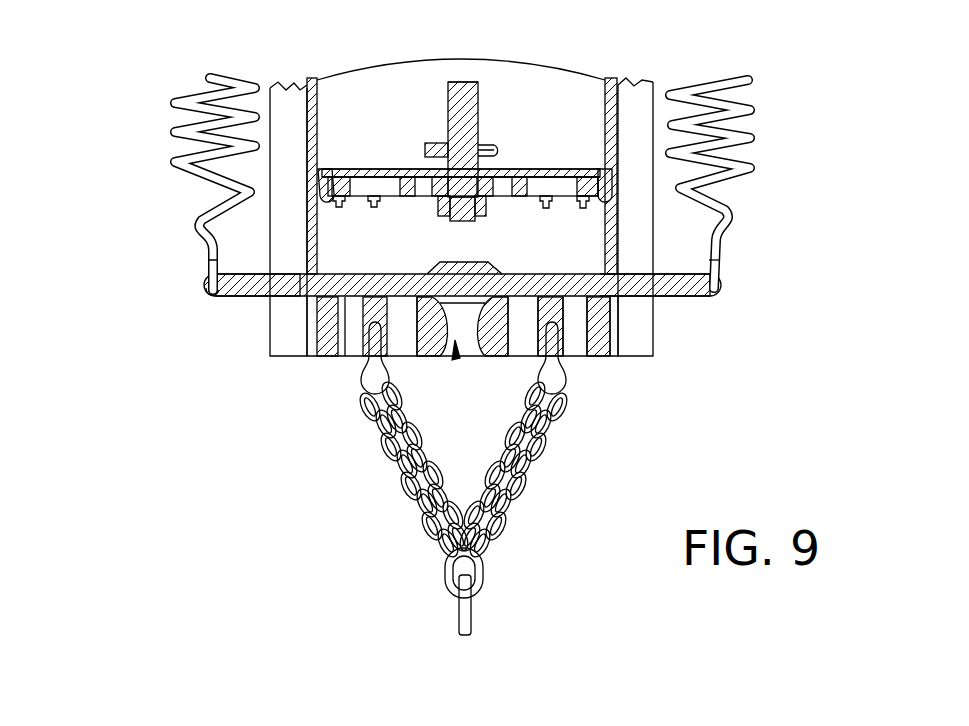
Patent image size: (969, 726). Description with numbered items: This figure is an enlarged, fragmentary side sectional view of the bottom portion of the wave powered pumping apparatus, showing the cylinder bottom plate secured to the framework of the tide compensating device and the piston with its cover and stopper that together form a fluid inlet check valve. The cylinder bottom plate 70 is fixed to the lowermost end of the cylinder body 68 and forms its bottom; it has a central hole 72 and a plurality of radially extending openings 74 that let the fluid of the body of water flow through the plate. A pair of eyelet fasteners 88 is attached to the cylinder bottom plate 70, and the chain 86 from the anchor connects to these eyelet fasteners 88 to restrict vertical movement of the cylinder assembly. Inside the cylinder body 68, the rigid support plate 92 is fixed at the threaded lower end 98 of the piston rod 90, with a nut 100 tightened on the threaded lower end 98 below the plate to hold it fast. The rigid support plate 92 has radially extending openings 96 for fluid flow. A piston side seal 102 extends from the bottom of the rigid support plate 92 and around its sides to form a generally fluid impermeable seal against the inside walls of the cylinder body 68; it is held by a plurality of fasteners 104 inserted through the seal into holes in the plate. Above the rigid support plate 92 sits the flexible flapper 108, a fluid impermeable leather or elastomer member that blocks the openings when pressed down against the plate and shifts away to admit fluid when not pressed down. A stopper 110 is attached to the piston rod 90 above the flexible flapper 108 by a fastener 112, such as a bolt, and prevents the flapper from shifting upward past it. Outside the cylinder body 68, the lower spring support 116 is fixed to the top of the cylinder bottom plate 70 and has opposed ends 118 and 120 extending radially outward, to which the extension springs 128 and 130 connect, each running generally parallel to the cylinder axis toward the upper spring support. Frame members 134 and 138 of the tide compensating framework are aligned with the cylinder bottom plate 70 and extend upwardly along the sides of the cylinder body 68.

The cylinder body 68 is at (322, 76).
The cylinder bottom plate 70 is at (330, 358).
The central hole 72 is at (455, 358).
The radially extending openings 74 is at (572, 357).
The chain 86 is at (420, 497).
The eyelet fasteners 88 is at (360, 378).
The piston rod 90 is at (462, 100).
The rigid support plate 92 is at (328, 176).
The radially extending openings 96 is at (390, 190).
The threaded lower end 98 is at (460, 220).
The nut 100 is at (482, 214).
The piston side seal 102 is at (325, 200).
The fasteners 104 is at (585, 209).
The flexible flapper 108 is at (400, 174).
The stopper 110 is at (490, 142).
The fastener 112 is at (500, 150).
The lower spring support 116 is at (303, 275).
The end 118 is at (250, 288).
The end 120 is at (675, 285).
The extension spring 128 is at (173, 133).
The extension spring 130 is at (752, 140).
The frame member 134 is at (288, 100).
The frame member 138 is at (637, 97).